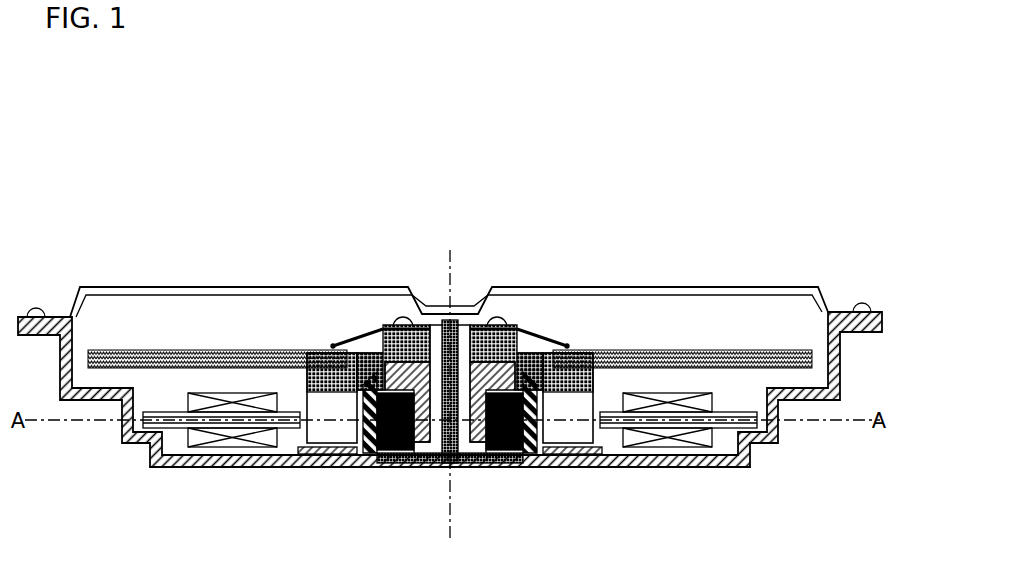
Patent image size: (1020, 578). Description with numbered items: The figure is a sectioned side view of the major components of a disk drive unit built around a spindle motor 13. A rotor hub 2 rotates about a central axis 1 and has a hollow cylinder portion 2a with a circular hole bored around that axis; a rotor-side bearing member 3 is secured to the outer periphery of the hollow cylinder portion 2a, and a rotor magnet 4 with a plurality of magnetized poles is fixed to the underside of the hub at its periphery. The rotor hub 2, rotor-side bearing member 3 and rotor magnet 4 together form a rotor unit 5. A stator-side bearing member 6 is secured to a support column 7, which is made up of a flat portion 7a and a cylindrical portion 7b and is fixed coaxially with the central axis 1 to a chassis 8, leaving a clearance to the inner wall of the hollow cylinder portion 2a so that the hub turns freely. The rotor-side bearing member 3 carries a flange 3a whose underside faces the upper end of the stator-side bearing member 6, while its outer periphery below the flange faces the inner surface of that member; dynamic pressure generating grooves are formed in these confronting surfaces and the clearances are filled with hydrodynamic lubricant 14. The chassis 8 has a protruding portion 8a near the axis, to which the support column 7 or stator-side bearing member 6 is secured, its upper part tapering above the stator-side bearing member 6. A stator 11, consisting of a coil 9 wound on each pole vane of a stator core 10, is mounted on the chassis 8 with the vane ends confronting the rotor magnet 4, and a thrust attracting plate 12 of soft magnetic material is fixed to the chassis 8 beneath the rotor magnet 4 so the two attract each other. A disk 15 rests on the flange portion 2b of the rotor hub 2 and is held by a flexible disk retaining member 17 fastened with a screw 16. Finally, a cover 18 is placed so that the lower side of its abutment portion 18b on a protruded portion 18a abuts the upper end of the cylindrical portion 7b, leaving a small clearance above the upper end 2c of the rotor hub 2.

The central axis 1 is at (449, 267).
The rotor hub 2 is at (441, 322).
The hollow cylinder portion 2a is at (406, 328).
The flange portion 2b is at (392, 332).
The upper end 2c is at (447, 341).
The rotor-side bearing member 3 is at (398, 317).
The flange 3a is at (365, 347).
The rotor magnet 4 is at (332, 415).
The rotor unit 5 is at (405, 302).
The stator-side bearing member 6 is at (373, 453).
The support column 7 is at (442, 437).
The flat portion 7a is at (427, 457).
The cylindrical portion 7b is at (450, 515).
The chassis 8 is at (628, 458).
The protruding portion 8a is at (547, 453).
The coil 9 is at (258, 402).
The stator core 10 is at (166, 422).
The stator 11 is at (450, 472).
The thrust attracting plate 12 is at (322, 455).
The spindle motor 13 is at (104, 461).
The hydrodynamic lubricant 14 is at (490, 403).
The disk 15 is at (230, 355).
The screw 16 is at (503, 326).
The disk retaining member 17 is at (566, 344).
The cover 18 is at (606, 259).
The protruded portion 18a is at (462, 316).
The abutment portion 18b is at (455, 316).